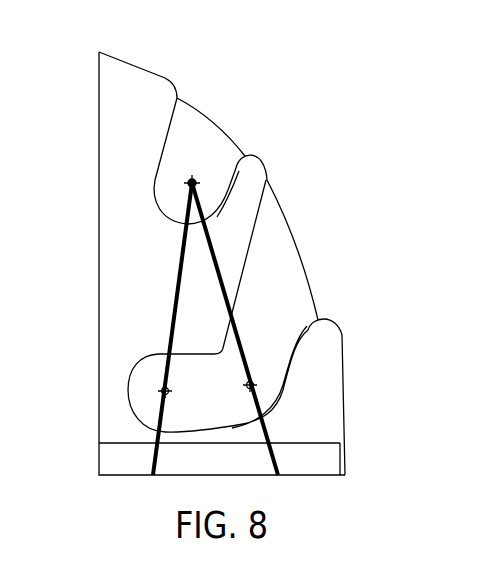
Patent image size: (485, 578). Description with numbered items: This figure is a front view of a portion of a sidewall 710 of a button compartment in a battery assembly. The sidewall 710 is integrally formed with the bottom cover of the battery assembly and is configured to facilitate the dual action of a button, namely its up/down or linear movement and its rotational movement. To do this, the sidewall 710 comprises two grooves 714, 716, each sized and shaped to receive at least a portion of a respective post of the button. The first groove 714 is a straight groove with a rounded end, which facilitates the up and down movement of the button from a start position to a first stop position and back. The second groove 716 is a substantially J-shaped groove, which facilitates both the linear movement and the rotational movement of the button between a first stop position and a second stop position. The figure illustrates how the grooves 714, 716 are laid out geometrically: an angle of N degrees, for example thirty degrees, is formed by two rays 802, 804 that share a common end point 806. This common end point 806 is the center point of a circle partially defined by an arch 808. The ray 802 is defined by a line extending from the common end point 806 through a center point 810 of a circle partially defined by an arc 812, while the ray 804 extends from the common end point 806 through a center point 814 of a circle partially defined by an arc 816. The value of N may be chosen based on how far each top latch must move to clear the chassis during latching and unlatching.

The sidewall 710 is at (64, 120).
The first groove 714 is at (219, 98).
The second groove 716 is at (300, 202).
The ray 802 is at (176, 287).
The ray 804 is at (238, 326).
The common end point 806 is at (189, 178).
The arch 808 is at (153, 209).
The center point 810 is at (158, 390).
The arc 812 is at (141, 351).
The center point 814 is at (262, 387).
The arc 816 is at (289, 418).